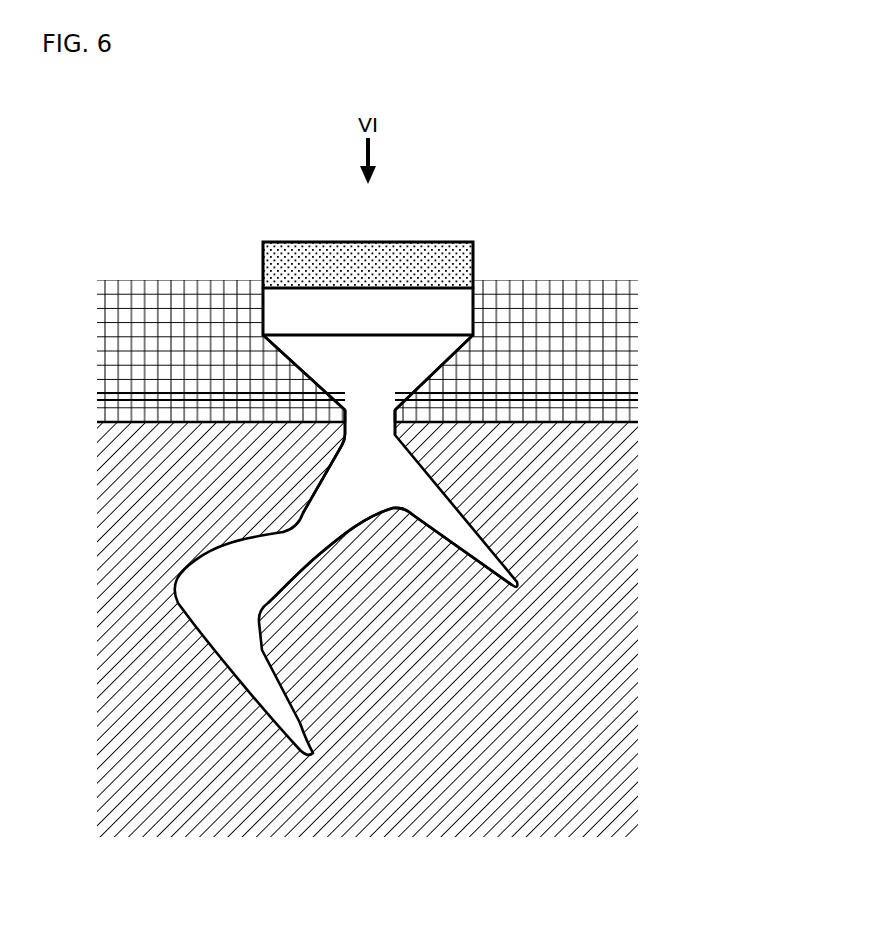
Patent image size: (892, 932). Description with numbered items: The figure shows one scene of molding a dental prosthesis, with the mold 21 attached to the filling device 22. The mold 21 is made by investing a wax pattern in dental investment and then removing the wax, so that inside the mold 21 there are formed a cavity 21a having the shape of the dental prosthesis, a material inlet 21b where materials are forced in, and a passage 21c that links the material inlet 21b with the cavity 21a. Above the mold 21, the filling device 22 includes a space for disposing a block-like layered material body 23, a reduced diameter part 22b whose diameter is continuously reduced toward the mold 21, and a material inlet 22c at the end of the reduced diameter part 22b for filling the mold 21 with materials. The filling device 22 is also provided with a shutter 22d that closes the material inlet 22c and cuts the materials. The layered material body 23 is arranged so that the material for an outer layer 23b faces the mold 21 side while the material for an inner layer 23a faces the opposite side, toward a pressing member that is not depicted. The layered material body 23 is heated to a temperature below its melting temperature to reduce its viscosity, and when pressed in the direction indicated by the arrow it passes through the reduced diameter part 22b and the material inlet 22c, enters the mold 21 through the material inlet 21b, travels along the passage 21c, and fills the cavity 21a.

The mold 21 is at (388, 825).
The cavity 21a is at (437, 515).
The material inlet 21b is at (365, 425).
The passage 21c is at (382, 430).
The filling device 22 is at (168, 292).
The reduced diameter part 22b is at (315, 350).
The material inlet 22c is at (360, 398).
The shutter 22d is at (630, 411).
The layered material body 23 is at (428, 218).
The material for an inner layer 23a is at (452, 257).
The material for an outer layer 23b is at (388, 305).